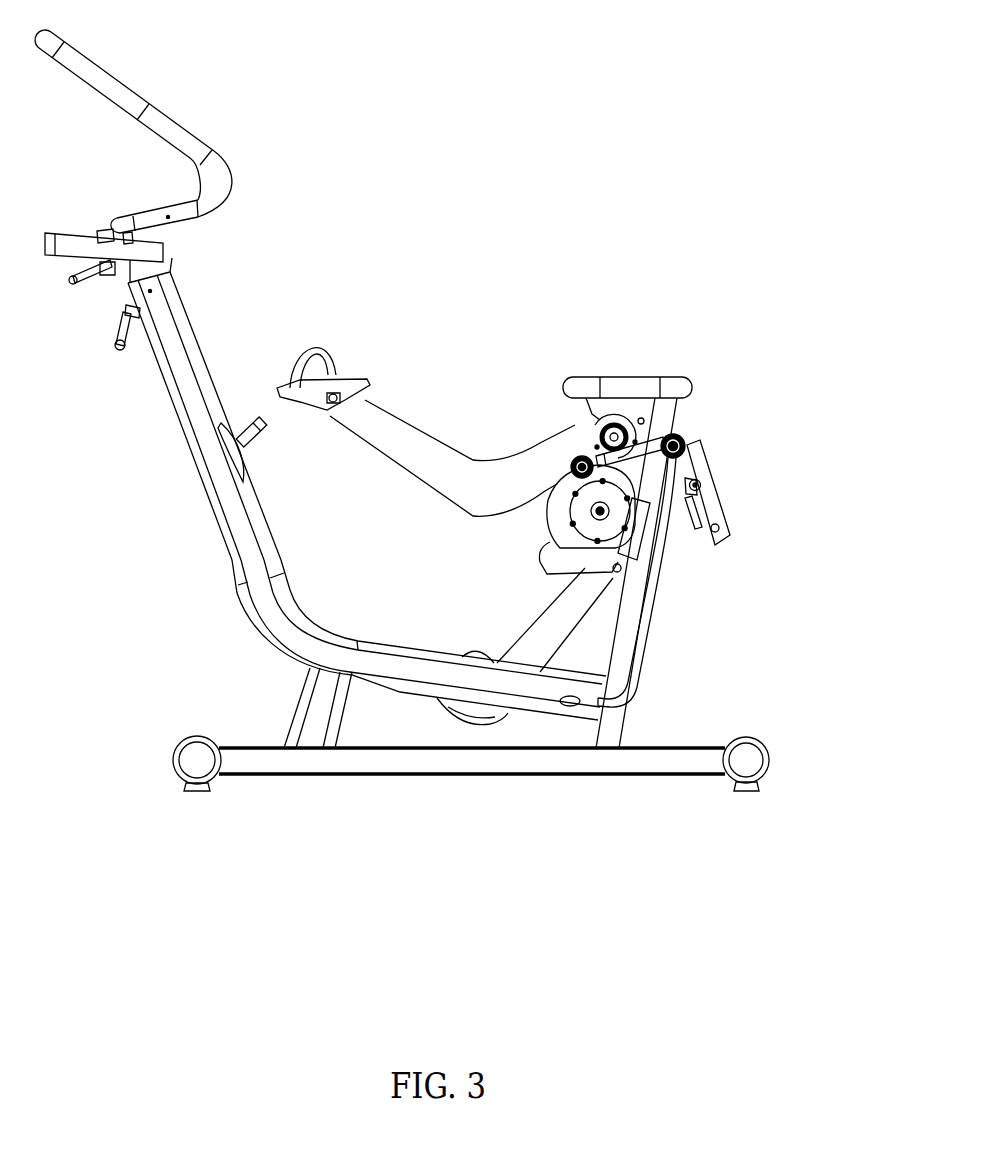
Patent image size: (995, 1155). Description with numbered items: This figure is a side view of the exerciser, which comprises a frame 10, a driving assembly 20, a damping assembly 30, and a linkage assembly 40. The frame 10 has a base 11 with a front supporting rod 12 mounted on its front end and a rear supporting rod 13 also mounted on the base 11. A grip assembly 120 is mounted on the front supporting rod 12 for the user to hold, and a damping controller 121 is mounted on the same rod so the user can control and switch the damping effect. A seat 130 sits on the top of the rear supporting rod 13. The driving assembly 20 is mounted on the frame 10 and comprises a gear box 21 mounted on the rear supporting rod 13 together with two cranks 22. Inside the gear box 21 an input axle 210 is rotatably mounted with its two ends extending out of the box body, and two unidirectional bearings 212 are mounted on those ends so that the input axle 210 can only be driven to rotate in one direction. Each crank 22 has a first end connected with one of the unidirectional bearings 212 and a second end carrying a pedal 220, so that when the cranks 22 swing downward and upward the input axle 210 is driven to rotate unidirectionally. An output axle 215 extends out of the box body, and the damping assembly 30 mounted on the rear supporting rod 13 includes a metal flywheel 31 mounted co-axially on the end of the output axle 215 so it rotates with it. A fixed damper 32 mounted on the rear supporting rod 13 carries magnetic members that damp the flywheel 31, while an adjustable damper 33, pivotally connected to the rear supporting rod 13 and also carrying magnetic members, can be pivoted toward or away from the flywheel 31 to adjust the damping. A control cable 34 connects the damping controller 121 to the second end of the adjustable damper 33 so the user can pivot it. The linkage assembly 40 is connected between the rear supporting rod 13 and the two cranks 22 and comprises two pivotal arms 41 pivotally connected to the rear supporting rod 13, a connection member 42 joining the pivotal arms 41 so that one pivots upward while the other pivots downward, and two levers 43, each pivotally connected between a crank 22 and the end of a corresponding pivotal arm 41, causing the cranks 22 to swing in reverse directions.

The frame 10 is at (165, 676).
The base 11 is at (267, 767).
The front supporting rod 12 is at (178, 382).
The grip assembly 120 is at (118, 86).
The damping controller 121 is at (257, 440).
The rear supporting rod 13 is at (617, 723).
The seat 130 is at (616, 378).
The driving assembly 20 is at (470, 322).
The gear box 21 is at (653, 420).
The input axle 210 is at (600, 430).
The unidirectional bearings 212 is at (602, 433).
The cranks 22 is at (417, 460).
The pedal 220 is at (292, 382).
The damping assembly 30 is at (470, 539).
The flywheel 31 is at (557, 520).
The fixed damper 32 is at (650, 530).
The output axle 215 is at (607, 517).
The adjustable damper 33 is at (580, 573).
The control cable 34 is at (632, 680).
The linkage assembly 40 is at (768, 438).
The pivotal arms 41 is at (707, 473).
The connection member 42 is at (703, 457).
The levers 43 is at (473, 458).